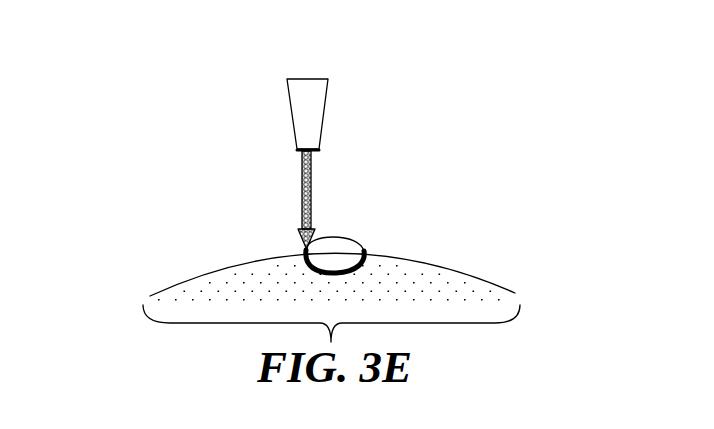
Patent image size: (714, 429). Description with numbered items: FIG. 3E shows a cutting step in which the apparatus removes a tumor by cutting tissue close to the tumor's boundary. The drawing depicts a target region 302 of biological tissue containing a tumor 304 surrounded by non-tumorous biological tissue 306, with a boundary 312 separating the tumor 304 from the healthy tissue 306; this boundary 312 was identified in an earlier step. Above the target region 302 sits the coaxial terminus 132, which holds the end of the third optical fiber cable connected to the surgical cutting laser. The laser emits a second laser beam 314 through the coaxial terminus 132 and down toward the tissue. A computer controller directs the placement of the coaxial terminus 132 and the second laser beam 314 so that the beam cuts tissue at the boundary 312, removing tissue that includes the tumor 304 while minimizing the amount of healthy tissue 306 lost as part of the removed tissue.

The coaxial terminus 132 is at (323, 115).
The second laser beam 314 is at (293, 153).
The target region 302 is at (324, 287).
The non-tumorous biological tissue 306 is at (496, 285).
The tumor 304 is at (351, 247).
The boundary 312 is at (368, 263).